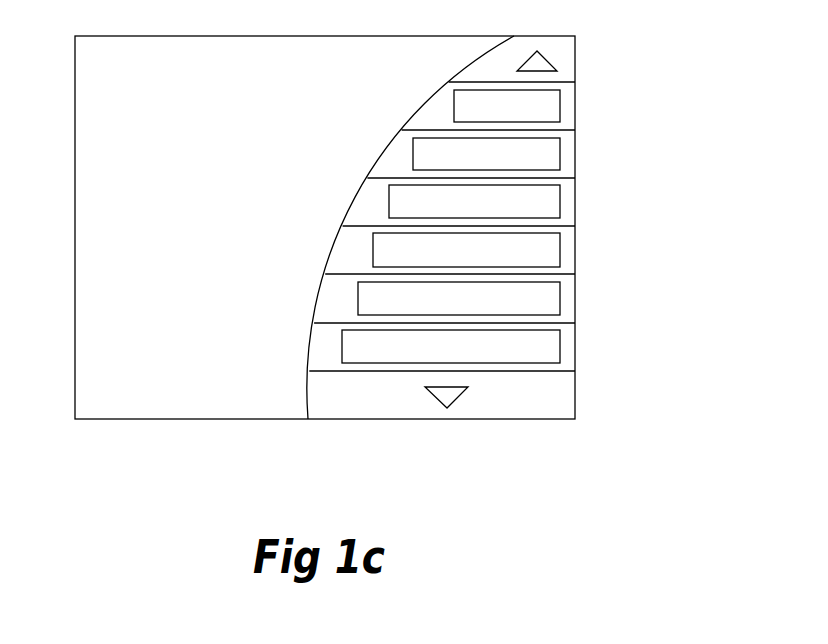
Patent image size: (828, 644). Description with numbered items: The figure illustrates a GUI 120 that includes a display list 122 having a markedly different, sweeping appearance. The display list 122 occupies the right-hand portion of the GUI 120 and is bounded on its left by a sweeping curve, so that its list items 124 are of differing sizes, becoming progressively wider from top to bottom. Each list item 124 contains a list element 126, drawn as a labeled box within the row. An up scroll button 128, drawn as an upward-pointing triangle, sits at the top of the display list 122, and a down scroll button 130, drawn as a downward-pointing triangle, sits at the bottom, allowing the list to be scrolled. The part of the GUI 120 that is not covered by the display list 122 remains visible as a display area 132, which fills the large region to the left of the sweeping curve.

The GUI 120 is at (300, 500).
The display list 122 is at (488, 420).
The list items 124 is at (575, 108).
The list elements 126 is at (489, 118).
The up scroll button 128 is at (575, 58).
The down scroll button 130 is at (575, 398).
The display area 132 is at (187, 233).